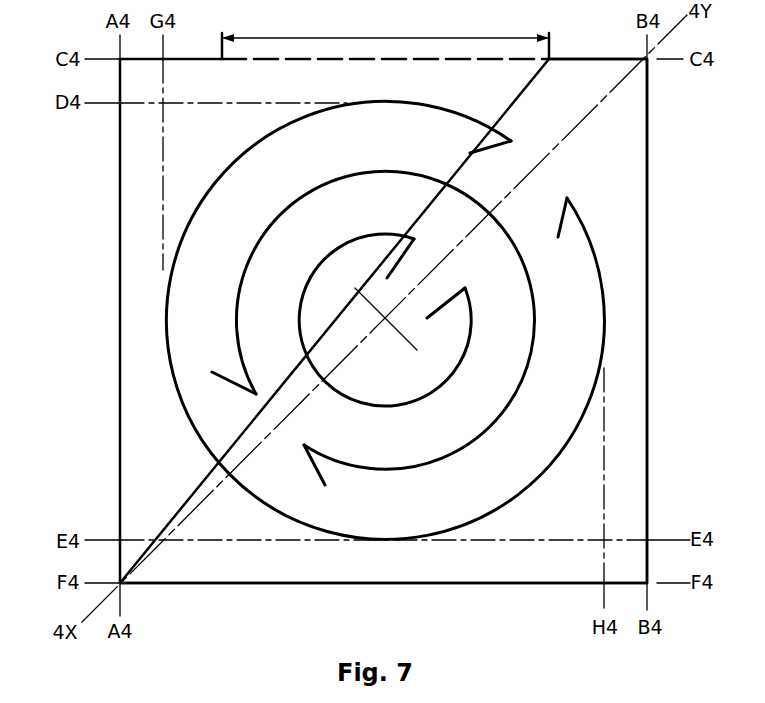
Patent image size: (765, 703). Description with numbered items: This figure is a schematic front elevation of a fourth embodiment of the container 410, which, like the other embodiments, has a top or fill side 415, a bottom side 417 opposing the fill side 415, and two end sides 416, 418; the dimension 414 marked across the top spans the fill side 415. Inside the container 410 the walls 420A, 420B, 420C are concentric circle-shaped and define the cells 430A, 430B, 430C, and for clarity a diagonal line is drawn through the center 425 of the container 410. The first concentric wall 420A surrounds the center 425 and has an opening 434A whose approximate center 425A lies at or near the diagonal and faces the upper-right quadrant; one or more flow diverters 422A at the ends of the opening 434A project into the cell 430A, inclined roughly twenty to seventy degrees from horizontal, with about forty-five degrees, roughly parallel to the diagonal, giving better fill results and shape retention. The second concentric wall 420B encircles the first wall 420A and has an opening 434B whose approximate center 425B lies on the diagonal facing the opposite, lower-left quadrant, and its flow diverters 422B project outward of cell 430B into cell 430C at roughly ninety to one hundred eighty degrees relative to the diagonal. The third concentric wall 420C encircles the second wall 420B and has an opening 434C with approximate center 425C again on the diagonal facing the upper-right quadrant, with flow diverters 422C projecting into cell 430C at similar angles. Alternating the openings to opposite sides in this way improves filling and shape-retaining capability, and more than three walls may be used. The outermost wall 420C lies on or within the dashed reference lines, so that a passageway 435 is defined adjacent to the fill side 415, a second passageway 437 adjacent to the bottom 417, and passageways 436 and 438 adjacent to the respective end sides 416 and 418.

The container 410 is at (106, 198).
The top edge span / notch width 414 is at (342, 59).
The fill side 415 is at (617, 57).
The end side 416 is at (95, 321).
The bottom side 417 is at (476, 585).
The end side 418 is at (650, 243).
The first concentric wall 420A is at (383, 236).
The second concentric wall 420B is at (480, 432).
The third concentric wall 420C is at (217, 182).
The flow diverters 422A is at (402, 263).
The flow diverters 422B is at (213, 374).
The flow diverters 422C is at (488, 147).
The center 425 is at (384, 322).
The center of opening 425A is at (432, 263).
The center of opening 425B is at (277, 418).
The center of opening 425C is at (533, 165).
The cell 430A is at (312, 328).
The cell 430B is at (260, 283).
The cell 430C is at (204, 248).
The opening 434A is at (445, 283).
The opening 434B is at (288, 434).
The opening 434C is at (535, 184).
The passageway 435 is at (183, 93).
The passageway 436 is at (125, 343).
The passageway 437 is at (393, 577).
The passageway 438 is at (600, 147).